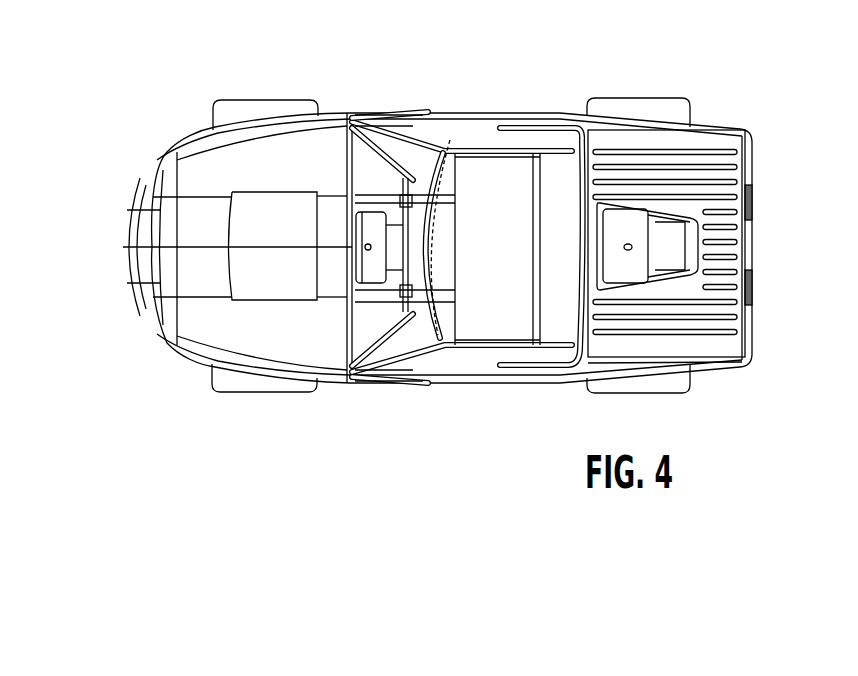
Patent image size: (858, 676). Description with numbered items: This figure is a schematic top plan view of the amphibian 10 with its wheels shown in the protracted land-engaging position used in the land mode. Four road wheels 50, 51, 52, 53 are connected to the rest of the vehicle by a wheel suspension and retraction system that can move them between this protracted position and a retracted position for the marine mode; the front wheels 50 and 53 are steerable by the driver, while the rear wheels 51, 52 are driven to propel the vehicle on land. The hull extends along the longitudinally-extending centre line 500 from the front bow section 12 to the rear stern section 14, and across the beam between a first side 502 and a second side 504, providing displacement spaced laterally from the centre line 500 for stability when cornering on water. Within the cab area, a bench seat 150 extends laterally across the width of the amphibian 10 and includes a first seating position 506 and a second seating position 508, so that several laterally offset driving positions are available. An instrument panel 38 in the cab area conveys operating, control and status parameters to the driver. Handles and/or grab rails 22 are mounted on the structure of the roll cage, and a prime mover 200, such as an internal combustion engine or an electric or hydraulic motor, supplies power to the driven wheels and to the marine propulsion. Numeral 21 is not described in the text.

The amphibian 10 is at (790, 236).
The front bow section 12 is at (111, 300).
The rear stern section 14 is at (766, 364).
The frame 21 is at (483, 132).
The handles and/or grab rails 22 is at (445, 148).
The instrument panel 38 is at (348, 247).
The front road wheel 50 is at (242, 382).
The rear road wheel 51 is at (667, 385).
The rear road wheel 52 is at (663, 100).
The front road wheel 53 is at (223, 108).
The bench seat 150 is at (508, 251).
The prime mover 200 is at (615, 243).
The longitudinally-extending centre line 500 is at (268, 247).
The first side 502 is at (410, 388).
The second side 504 is at (428, 118).
The first seating position 506 is at (510, 178).
The second seating position 508 is at (515, 307).